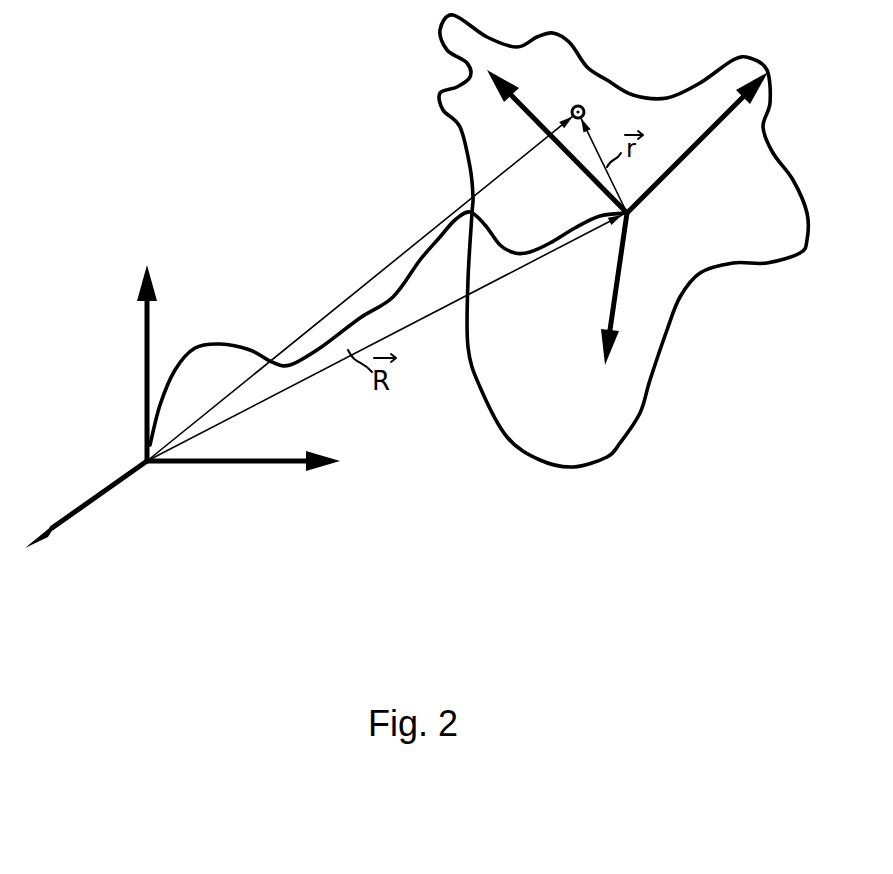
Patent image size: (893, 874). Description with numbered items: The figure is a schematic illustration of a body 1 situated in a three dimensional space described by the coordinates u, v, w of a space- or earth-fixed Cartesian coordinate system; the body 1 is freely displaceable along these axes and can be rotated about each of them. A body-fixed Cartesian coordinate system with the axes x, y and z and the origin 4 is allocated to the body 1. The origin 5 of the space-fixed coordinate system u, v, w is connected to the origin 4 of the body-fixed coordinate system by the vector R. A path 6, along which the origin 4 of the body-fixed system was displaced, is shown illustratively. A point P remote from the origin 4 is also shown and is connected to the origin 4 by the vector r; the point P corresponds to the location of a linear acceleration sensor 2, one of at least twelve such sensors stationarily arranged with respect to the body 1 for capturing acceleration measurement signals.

The body 1 is at (610, 450).
The linear acceleration sensor 2 is at (583, 106).
The origin of the body-fixed coordinate system 4 is at (632, 215).
The origin of the space-fixed coordinate system 5 is at (150, 463).
The path 6 is at (222, 343).